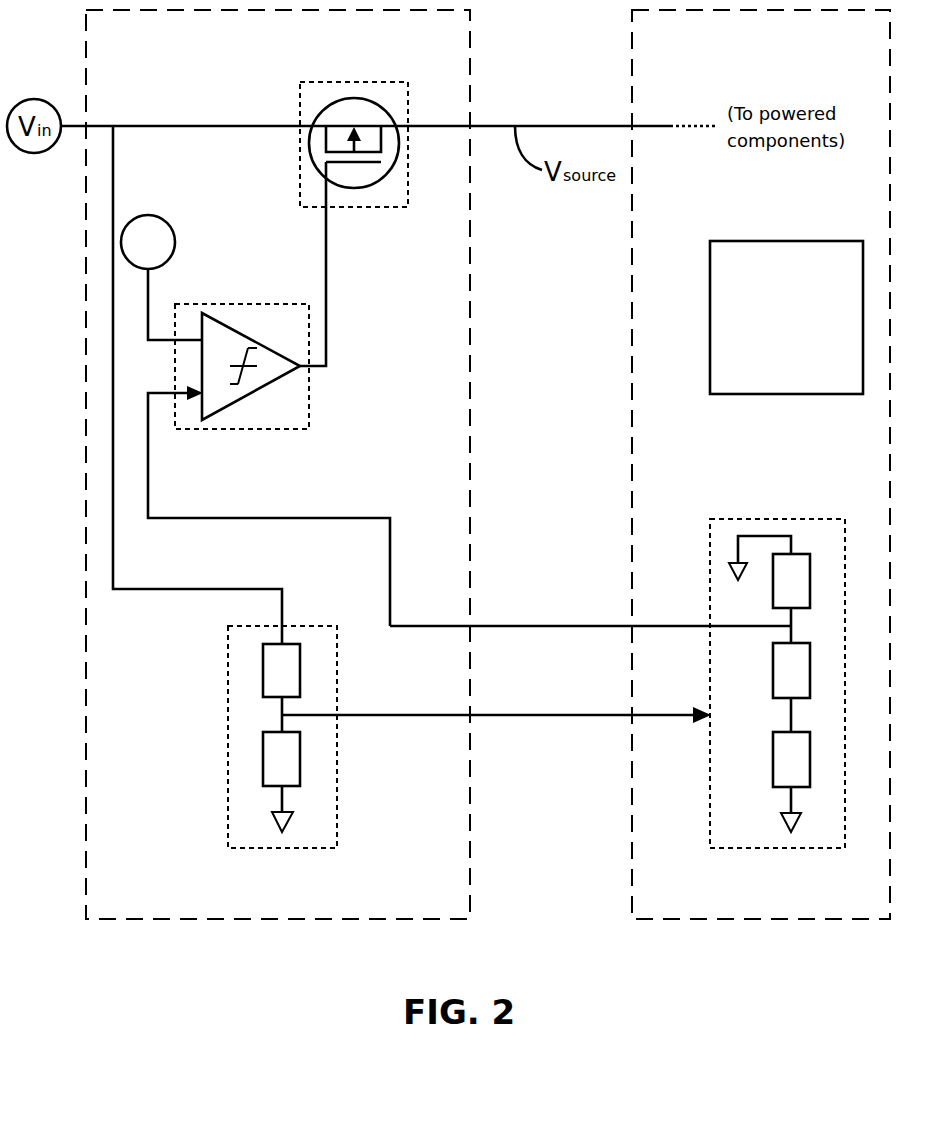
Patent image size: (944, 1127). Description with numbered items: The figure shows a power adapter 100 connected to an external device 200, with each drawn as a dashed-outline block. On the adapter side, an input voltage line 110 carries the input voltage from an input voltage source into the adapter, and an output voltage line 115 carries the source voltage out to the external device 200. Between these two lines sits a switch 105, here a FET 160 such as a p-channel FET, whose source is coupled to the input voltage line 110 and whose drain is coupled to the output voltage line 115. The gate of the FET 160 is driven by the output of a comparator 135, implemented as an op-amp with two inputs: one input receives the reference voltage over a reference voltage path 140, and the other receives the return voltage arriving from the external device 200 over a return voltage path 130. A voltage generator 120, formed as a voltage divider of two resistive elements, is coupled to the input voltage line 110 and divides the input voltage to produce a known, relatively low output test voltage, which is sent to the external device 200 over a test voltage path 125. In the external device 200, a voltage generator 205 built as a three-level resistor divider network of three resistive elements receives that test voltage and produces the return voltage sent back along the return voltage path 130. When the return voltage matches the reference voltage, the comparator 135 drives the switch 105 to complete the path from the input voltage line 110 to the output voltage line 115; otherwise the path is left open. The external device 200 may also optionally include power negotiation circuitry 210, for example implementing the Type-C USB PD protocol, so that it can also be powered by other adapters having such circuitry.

The power adapter 100 is at (255, 920).
The switch 105 is at (361, 138).
The input voltage line 110 is at (220, 126).
The output voltage line 115 is at (443, 126).
The voltage generator 120 is at (282, 848).
The test voltage path 125 is at (362, 715).
The return voltage path 130 is at (530, 626).
The comparator 135 is at (266, 429).
The reference voltage path 140 is at (149, 286).
The FET 160 is at (355, 188).
The external device 200 is at (775, 920).
The voltage generator 205 is at (791, 848).
The power negotiation circuitry 210 is at (710, 322).